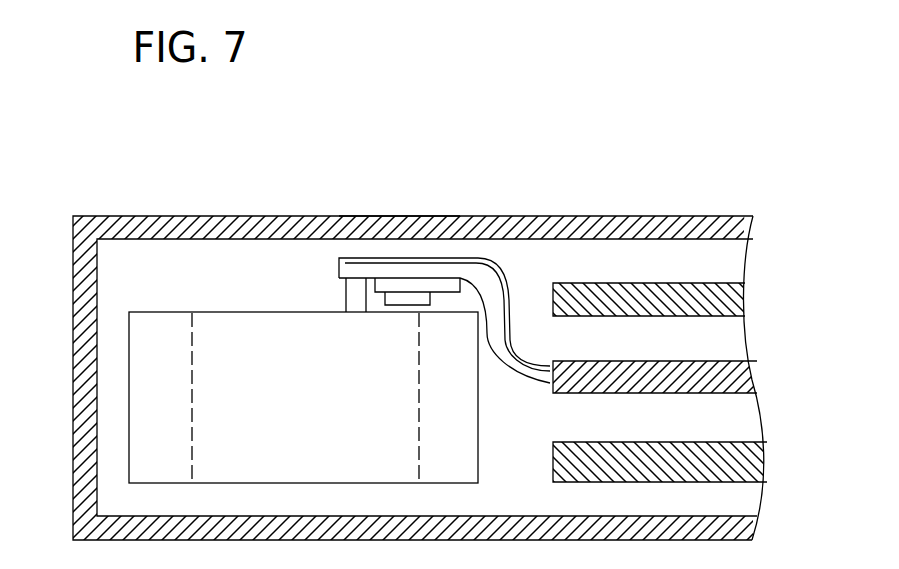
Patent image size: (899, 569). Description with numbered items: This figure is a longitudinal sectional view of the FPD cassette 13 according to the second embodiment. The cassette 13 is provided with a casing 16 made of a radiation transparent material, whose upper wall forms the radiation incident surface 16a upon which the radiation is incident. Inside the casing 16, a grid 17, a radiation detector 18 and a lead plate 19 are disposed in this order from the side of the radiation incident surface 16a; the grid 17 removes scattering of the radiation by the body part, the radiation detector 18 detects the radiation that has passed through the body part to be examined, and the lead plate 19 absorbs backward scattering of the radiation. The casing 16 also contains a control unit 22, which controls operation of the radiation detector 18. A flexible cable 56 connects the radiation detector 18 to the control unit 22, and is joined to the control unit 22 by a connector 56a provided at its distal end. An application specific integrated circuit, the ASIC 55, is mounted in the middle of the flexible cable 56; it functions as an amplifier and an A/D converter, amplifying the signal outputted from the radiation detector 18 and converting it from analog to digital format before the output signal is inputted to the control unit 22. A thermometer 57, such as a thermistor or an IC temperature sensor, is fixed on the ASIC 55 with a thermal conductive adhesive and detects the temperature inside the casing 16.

The cassette 13 is at (540, 161).
The casing 16 is at (73, 300).
The radiation incident surface 16a is at (321, 216).
The grid 17 is at (600, 282).
The radiation detector 18 is at (590, 360).
The lead plate 19 is at (598, 442).
The control unit 22 is at (243, 312).
The application specific integrated circuit (ASIC) 55 is at (445, 285).
The flexible cable 56 is at (517, 385).
The connector 56a is at (355, 300).
The thermometer 57 is at (400, 298).